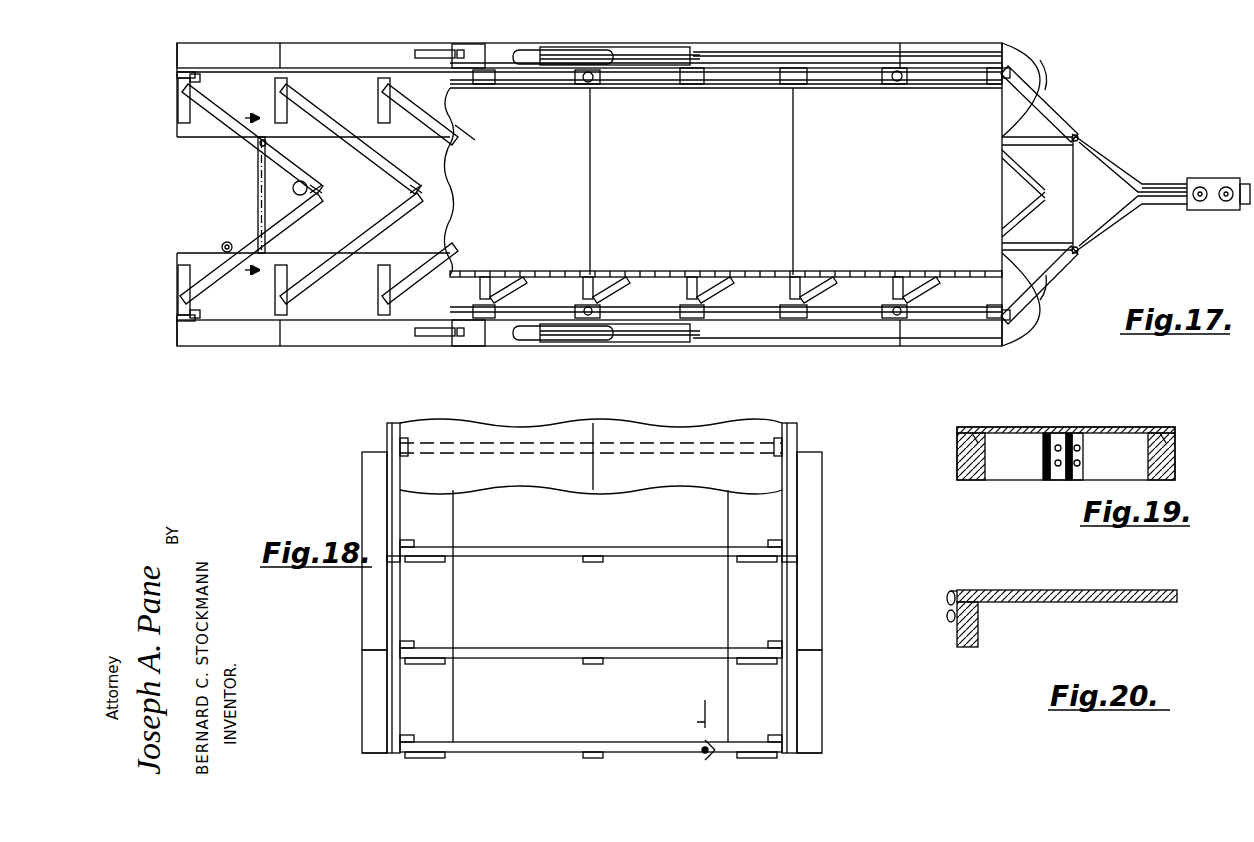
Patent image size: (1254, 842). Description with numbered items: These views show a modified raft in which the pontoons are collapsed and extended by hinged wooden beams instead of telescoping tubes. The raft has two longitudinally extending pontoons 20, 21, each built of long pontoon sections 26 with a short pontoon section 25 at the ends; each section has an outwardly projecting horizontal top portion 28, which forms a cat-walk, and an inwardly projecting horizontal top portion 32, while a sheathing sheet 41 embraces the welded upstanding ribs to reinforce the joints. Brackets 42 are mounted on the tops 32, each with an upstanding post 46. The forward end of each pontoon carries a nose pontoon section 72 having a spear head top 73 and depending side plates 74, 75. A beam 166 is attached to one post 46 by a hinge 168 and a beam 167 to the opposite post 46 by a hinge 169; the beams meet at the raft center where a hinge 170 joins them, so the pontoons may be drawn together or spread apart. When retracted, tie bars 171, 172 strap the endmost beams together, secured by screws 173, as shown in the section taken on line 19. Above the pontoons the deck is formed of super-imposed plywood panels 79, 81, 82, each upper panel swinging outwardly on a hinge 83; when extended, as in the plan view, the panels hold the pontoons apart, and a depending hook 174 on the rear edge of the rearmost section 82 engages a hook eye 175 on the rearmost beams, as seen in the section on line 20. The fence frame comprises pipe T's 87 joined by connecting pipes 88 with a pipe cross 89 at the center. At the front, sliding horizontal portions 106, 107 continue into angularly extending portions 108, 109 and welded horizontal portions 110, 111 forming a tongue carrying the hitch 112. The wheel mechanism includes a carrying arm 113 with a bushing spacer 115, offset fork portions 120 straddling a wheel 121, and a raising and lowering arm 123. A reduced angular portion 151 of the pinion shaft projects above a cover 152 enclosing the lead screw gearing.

In FIG. 17, the section line 19— 19 is at (256, 192).
In FIG. 17, the pontoon 20 is at (177, 43).
In FIG. 18, the pontoon 20 is at (360, 753).
In FIG. 17, the pontoon 21 is at (177, 346).
In FIG. 18, the pontoon 21 is at (822, 754).
In FIG. 17, the pontoon section 25 is at (928, 43).
In FIG. 18, the pontoon section 25 is at (360, 700).
In FIG. 17, the pontoon section 26 is at (388, 42).
In FIG. 18, the pontoon section 26 is at (352, 505).
In FIG. 17, the outwardly projecting horizontal top portion 28 is at (334, 42).
In FIG. 18, the outwardly projecting horizontal top portion 28 is at (357, 672).
In FIG. 17, the inwardly projecting horizontal top portion 32 is at (410, 128).
In FIG. 18, the inwardly projecting horizontal top portion 32 is at (454, 608).
In FIG. 17, the sheathing sheet 41 is at (870, 50).
In FIG. 18, the sheathing sheet 41 is at (385, 605).
In FIG. 17, the bracket 42 is at (178, 114).
In FIG. 18, the bracket 42 is at (424, 563).
In FIG. 17, the upstanding post 46 is at (177, 76).
In FIG. 18, the upstanding post 46 is at (397, 573).
In FIG. 17, the forward pontoon section 72 is at (1053, 84).
In FIG. 17, the top 73 is at (1020, 52).
In FIG. 17, the side plate 74 is at (1053, 105).
In FIG. 17, the side plate 75 is at (1048, 62).
In FIG. 17, the panel 79 is at (803, 159).
In FIG. 17, the panel 81 is at (594, 155).
In FIG. 18, the panel 81 is at (718, 423).
In FIG. 20, the panel 82 is at (1150, 590).
In FIG. 17, the hinge 83 is at (668, 270).
In FIG. 17, the pipe T 87 is at (712, 91).
In FIG. 17, the connecting pipe 88 is at (648, 88).
In FIG. 17, the pipe cross 89 is at (582, 86).
In FIG. 17, the horizontal portion 106 is at (1002, 146).
In FIG. 17, the horizontal portion 107 is at (1002, 246).
In FIG. 17, the angularly extending portion 108 is at (1121, 159).
In FIG. 17, the angularly extending portion 109 is at (1111, 233).
In FIG. 17, the horizontal portion 110 is at (1172, 184).
In FIG. 17, the horizontal portion 111 is at (1168, 210).
In FIG. 17, the hitch 112 is at (1248, 150).
In FIG. 17, the carrying arm 113 is at (652, 46).
In FIG. 17, the spacer 115 is at (701, 54).
In FIG. 17, the offset fork portion 120 is at (605, 47).
In FIG. 17, the wheel 121 is at (520, 46).
In FIG. 17, the raising and lowering arm 123 is at (430, 46).
In FIG. 17, the reduced angular portion 151 is at (463, 48).
In FIG. 17, the cover 152 is at (477, 48).
In FIG. 17, the beam 166 is at (240, 100).
In FIG. 18, the beam 166 is at (545, 533).
In FIG. 19, the beam 166 is at (973, 480).
In FIG. 17, the beam 167 is at (222, 280).
In FIG. 18, the beam 167 is at (668, 530).
In FIG. 19, the beam 167 is at (1169, 456).
In FIG. 20, the beam 167 is at (981, 635).
In FIG. 17, the hinge 168 is at (225, 64).
In FIG. 18, the hinge 168 is at (407, 547).
In FIG. 17, the hinge 169 is at (197, 312).
In FIG. 18, the hinge 169 is at (775, 540).
In FIG. 17, the hinge 170 is at (300, 182).
In FIG. 18, the hinge 170 is at (587, 562).
In FIG. 19, the hinge 170 is at (1086, 456).
In FIG. 17, the tie bar 171 is at (1067, 194).
In FIG. 17, the tie bar 172 is at (256, 196).
In FIG. 19, the tie bar 172 is at (1075, 410).
In FIG. 17, the screw 173 is at (258, 148).
In FIG. 19, the screw 173 is at (970, 432).
In FIG. 20, the depending hook 174 is at (947, 600).
In FIG. 18, the hook eye 175 is at (702, 750).
In FIG. 20, the hook eye 175 is at (947, 620).